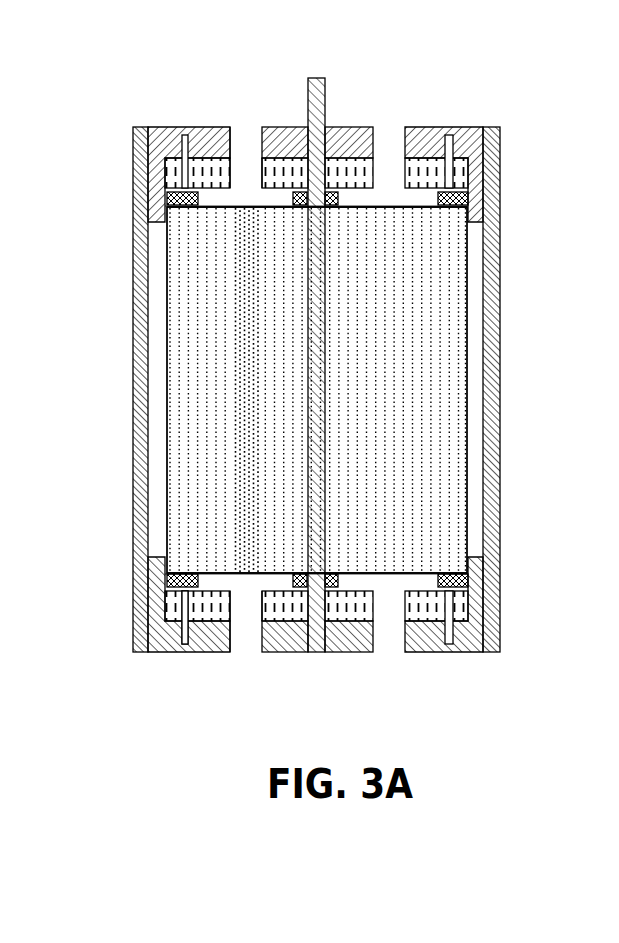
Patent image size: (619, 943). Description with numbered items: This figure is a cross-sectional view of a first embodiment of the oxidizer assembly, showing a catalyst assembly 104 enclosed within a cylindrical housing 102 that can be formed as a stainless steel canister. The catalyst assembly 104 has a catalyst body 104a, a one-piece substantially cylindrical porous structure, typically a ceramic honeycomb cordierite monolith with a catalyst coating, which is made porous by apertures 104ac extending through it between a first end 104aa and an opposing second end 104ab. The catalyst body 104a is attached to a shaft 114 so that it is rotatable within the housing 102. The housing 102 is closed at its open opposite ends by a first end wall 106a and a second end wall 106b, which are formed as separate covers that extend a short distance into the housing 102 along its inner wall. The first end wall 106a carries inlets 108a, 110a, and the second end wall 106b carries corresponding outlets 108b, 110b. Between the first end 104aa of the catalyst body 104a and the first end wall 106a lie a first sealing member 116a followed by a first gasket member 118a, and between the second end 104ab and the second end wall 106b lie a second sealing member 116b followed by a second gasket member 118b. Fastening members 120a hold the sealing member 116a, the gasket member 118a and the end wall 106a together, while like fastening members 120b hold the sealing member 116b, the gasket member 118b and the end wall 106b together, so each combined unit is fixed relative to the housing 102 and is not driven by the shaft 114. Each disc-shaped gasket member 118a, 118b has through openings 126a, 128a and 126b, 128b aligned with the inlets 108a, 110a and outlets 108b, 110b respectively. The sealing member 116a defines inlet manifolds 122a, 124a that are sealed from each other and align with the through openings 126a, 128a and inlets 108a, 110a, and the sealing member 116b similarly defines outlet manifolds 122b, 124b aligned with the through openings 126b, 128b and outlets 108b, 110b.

The housing 102 is at (318, 389).
The catalyst assembly 104 is at (268, 390).
The catalyst body 104a is at (381, 390).
The first end 104aa is at (378, 212).
The second end 104ab is at (370, 542).
The apertures 104ac is at (421, 390).
The first end wall 106a is at (150, 165).
The second end wall 106b is at (151, 628).
The inlet 108a is at (226, 133).
The outlet 108b is at (280, 627).
The inlet 110a is at (395, 140).
The outlet 110b is at (348, 642).
The shaft 114 is at (285, 347).
The first sealing member 116a is at (511, 189).
The second sealing member 116b is at (512, 600).
The first gasket member 118a is at (495, 163).
The second gasket member 118b is at (496, 626).
The fastening members 120a is at (510, 141).
The fastening members 120b is at (117, 616).
The inlet manifold 122a is at (126, 180).
The outlet manifold 122b is at (125, 559).
The inlet manifold 124a is at (380, 223).
The outlet manifold 124b is at (372, 565).
The through opening 126a is at (207, 139).
The through opening 126b is at (216, 646).
The through opening 128a is at (435, 161).
The through opening 128b is at (437, 629).